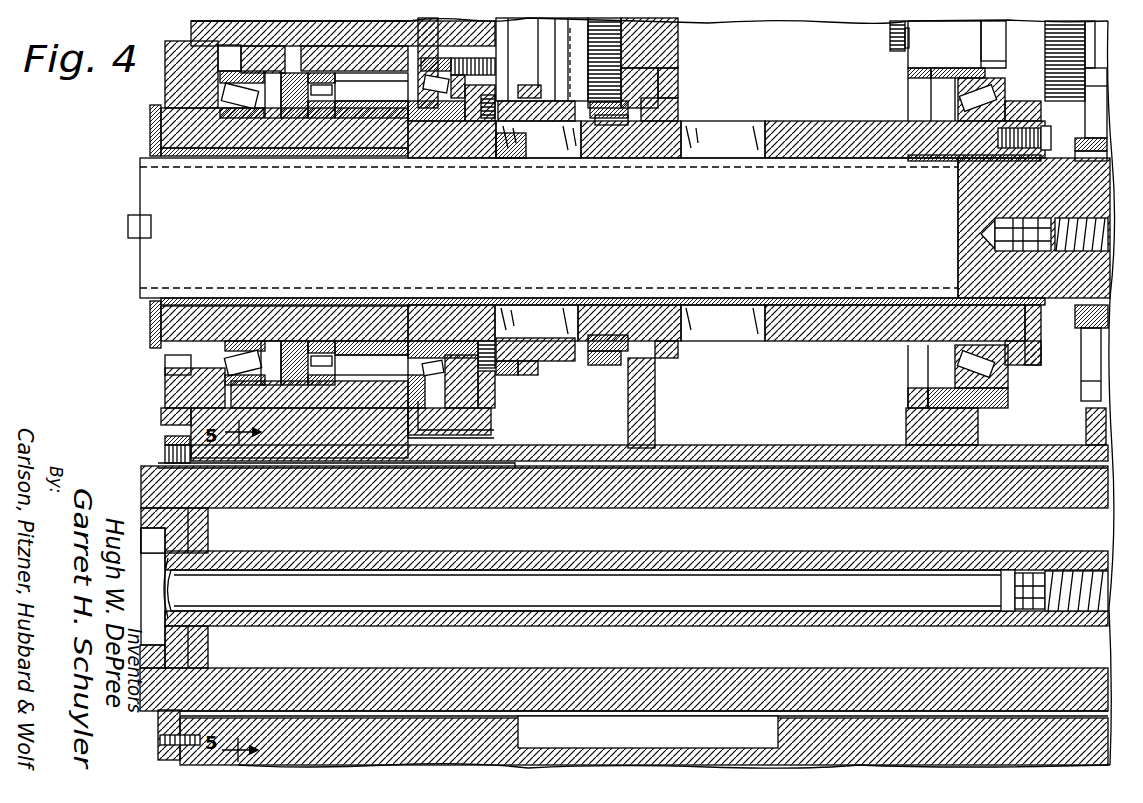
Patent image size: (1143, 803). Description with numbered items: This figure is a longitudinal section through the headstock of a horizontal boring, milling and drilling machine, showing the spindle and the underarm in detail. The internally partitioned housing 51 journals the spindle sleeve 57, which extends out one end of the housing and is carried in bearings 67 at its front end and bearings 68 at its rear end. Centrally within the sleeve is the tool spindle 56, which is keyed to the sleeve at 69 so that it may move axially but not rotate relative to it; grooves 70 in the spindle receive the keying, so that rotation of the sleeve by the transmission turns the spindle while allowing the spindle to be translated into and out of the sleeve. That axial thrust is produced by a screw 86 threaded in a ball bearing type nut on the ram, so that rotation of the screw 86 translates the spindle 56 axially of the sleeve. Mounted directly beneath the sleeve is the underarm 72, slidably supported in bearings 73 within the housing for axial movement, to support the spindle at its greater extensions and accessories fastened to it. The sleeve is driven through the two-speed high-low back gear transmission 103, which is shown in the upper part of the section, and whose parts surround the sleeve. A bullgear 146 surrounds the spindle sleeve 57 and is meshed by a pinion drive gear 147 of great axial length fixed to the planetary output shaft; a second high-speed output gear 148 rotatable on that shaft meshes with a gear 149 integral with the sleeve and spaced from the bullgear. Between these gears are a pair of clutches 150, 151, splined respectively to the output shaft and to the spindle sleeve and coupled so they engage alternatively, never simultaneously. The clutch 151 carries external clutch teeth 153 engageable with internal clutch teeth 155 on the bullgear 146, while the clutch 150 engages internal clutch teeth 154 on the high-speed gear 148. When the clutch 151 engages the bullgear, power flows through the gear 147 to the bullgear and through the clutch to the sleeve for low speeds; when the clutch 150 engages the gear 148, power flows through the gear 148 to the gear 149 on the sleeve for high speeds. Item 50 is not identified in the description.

The headstock housing 50 is at (148, 403).
The housing 51 is at (155, 432).
The tool spindle 56 is at (134, 250).
The spindle sleeve 57 is at (163, 127).
The bearings 67 is at (230, 95).
The bearings 68 is at (975, 88).
The key 69 is at (528, 142).
The grooves 70 is at (460, 165).
The underarm 72 is at (133, 470).
The bearings 73 is at (393, 462).
The screw 86 is at (1065, 205).
The two-speed high-low back gear transmission 103 is at (388, 8).
The bullgear 146 is at (488, 428).
The pinion drive gear 147 is at (532, 58).
The high-speed output gear 148 is at (665, 42).
The gear 149 is at (595, 357).
The clutch 150 is at (542, 104).
The clutch 151 is at (545, 355).
The external clutch teeth 153 is at (490, 358).
The internal clutch teeth 154 is at (578, 63).
The internal clutch teeth 155 is at (503, 108).